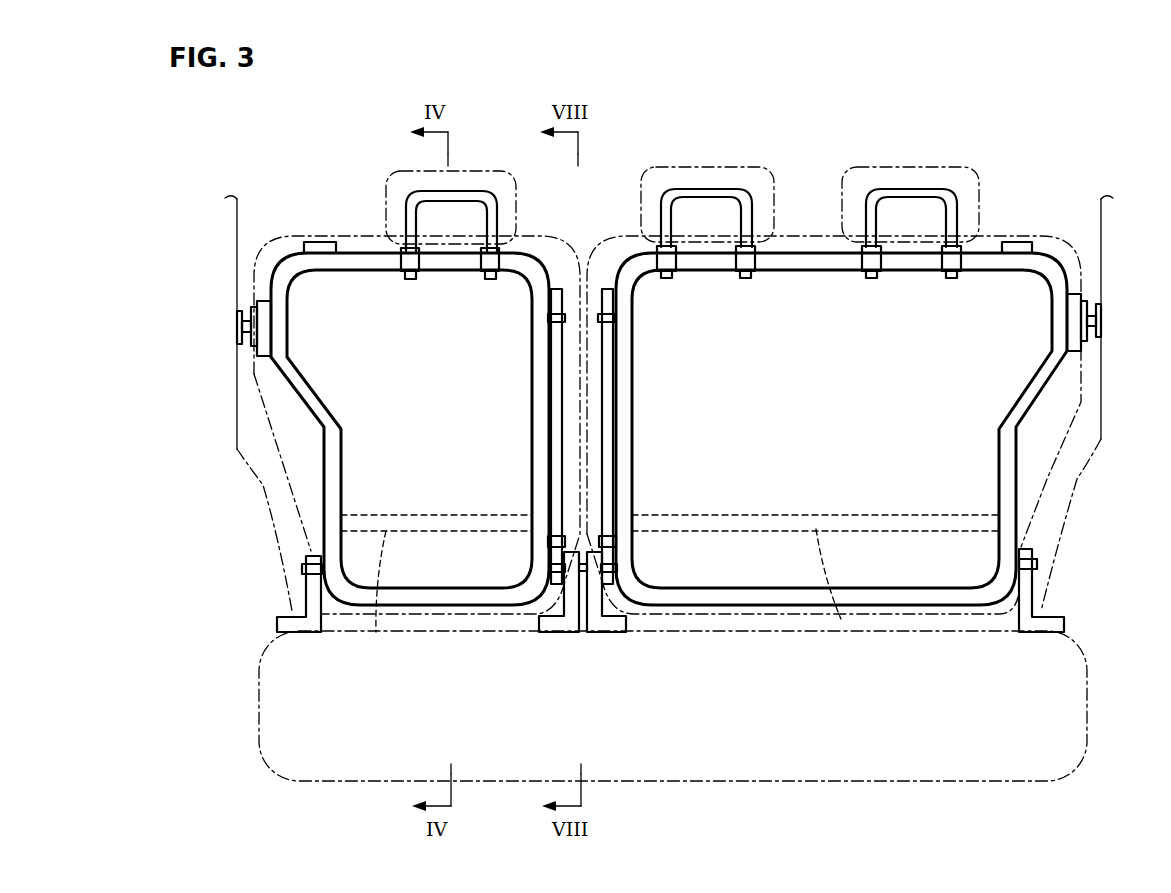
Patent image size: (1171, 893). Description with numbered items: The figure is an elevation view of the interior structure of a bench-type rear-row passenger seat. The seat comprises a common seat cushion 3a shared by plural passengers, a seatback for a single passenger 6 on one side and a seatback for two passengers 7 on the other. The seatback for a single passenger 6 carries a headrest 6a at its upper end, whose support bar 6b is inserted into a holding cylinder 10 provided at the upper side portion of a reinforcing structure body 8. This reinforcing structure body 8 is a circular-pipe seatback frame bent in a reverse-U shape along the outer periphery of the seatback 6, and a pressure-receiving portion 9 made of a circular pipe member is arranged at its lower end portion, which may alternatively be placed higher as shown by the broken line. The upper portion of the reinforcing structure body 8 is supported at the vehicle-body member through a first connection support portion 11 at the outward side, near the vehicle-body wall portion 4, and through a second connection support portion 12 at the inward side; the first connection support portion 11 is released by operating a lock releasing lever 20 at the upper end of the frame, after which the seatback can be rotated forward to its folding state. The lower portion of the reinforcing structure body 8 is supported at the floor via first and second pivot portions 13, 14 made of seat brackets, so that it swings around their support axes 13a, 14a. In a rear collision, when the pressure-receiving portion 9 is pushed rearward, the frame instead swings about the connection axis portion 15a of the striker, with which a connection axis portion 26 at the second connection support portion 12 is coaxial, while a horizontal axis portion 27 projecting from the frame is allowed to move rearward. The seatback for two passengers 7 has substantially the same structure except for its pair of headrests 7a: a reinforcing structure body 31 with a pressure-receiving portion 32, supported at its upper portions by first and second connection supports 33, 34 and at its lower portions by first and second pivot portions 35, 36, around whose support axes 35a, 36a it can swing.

The seat cushion 3a is at (1085, 645).
The vehicle-body wall portion 4 is at (230, 222).
The seatback for a single passenger 6 is at (575, 232).
The headrest 6a is at (383, 190).
The support bar 6b is at (460, 192).
The seatback for two passengers 7 is at (1055, 213).
The headrests 7a is at (678, 170).
The reinforcing structure body 8 is at (312, 403).
The pressure-receiving portion 9 is at (412, 603).
The holding cylinder 10 is at (478, 272).
The first connection support portion 11 is at (230, 343).
The second connection support portion 12 is at (540, 472).
The first pivot portion 13 is at (307, 603).
The support axis 13a is at (305, 570).
The second pivot portion 14 is at (557, 640).
The support axis 14a is at (548, 600).
The connection axis portion 15a is at (255, 318).
The lock releasing lever 20 is at (317, 247).
The connection axis portion 26 is at (600, 320).
The horizontal axis portion 27 is at (559, 546).
The reinforcing structure body 31 is at (810, 256).
The pressure-receiving portion 32 is at (860, 597).
The first connection support 33 is at (1100, 282).
The second connection support 34 is at (625, 419).
The first pivot portion 35 is at (1027, 603).
The support axis 35a is at (1037, 565).
The second pivot portion 36 is at (595, 617).
The support axis 36a is at (605, 569).